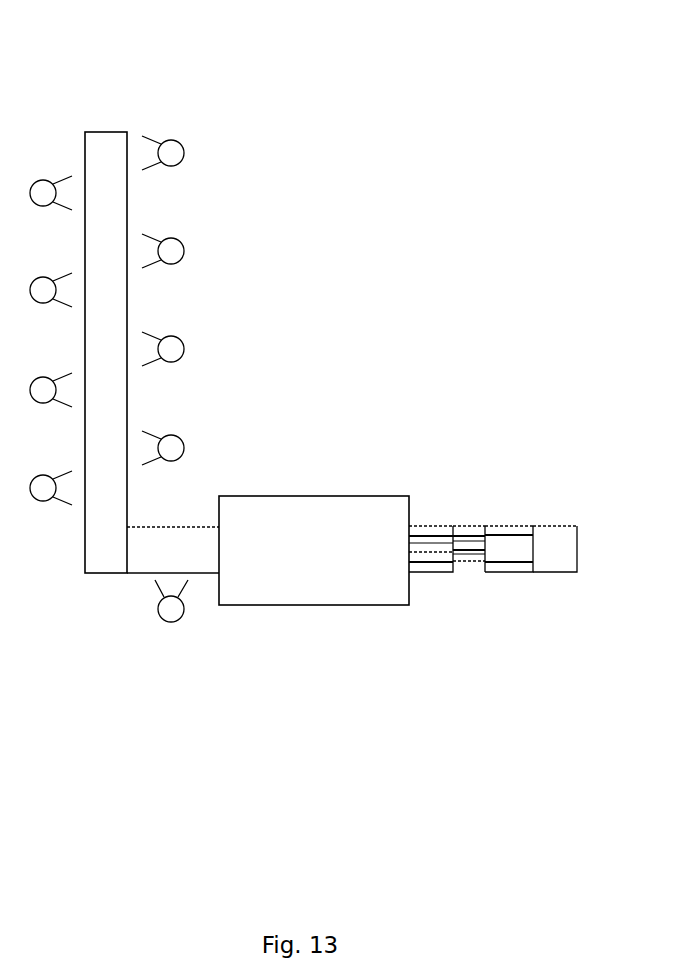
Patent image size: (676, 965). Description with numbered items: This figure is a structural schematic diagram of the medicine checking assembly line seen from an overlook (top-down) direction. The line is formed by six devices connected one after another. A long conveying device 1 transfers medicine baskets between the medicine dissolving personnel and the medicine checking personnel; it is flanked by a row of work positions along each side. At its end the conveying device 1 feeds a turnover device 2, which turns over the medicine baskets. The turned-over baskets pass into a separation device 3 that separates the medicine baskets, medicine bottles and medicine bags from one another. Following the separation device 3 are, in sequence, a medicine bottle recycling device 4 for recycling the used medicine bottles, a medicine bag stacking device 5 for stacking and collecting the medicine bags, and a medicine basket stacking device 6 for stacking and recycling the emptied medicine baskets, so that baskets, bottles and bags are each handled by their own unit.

The conveying device 1 is at (112, 152).
The turnover device 2 is at (275, 569).
The separation device 3 is at (470, 550).
The medicine bottle recycling device 4 is at (431, 568).
The medicine bag stacking device 5 is at (509, 568).
The medicine basket stacking device 6 is at (552, 562).